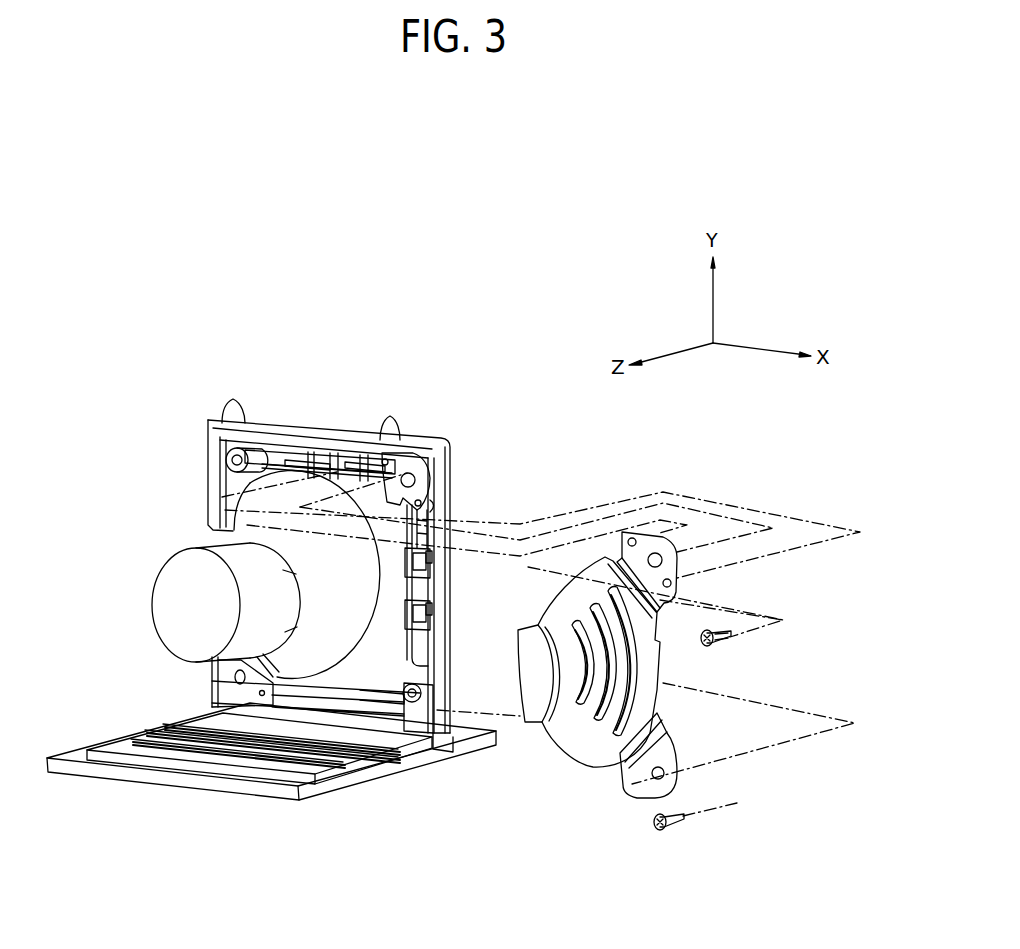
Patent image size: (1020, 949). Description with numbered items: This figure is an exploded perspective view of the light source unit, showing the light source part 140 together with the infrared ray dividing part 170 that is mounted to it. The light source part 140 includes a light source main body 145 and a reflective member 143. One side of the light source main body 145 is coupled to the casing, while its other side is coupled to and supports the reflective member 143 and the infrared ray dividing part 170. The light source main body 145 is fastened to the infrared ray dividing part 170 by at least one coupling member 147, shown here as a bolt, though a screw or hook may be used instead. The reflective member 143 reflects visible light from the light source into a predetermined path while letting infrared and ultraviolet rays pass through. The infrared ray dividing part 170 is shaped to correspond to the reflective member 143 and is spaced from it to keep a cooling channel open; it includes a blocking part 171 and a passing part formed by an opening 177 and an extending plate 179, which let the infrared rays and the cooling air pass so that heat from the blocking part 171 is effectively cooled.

The light source part 140 is at (155, 348).
The reflective member 143 is at (278, 488).
The light source main body 145 is at (435, 457).
The coupling member 147 is at (727, 643).
The infrared ray dividing part 170 is at (645, 885).
The blocking part 171 is at (567, 733).
The opening 177 is at (608, 731).
The extending plate 179 is at (634, 720).